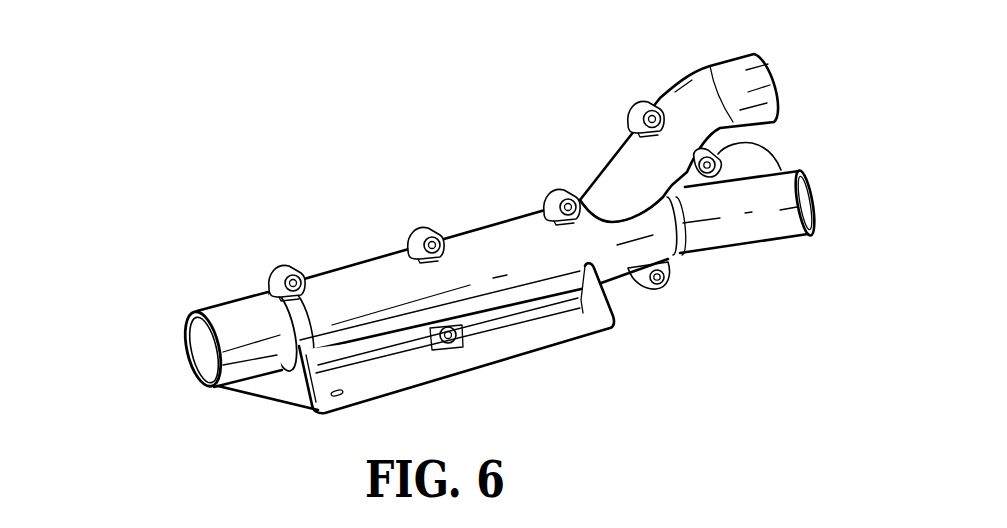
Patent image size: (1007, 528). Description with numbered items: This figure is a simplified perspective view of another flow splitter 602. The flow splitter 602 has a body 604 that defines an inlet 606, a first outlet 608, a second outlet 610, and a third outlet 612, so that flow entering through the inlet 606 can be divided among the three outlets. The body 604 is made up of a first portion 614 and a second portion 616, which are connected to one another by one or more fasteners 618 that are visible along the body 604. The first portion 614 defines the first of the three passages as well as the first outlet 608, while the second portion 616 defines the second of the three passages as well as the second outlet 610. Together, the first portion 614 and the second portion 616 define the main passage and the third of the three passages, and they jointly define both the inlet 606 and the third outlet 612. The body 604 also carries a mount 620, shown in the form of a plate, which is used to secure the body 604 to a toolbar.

The flow splitter 602 is at (266, 183).
The body 604 is at (510, 248).
The inlet 606 is at (220, 305).
The first outlet 608 is at (800, 188).
The second outlet 610 is at (760, 160).
The third outlet 612 is at (747, 76).
The first portion 614 is at (718, 258).
The second portion 616 is at (178, 331).
The fasteners 618 is at (277, 264).
The mount 620 is at (528, 337).